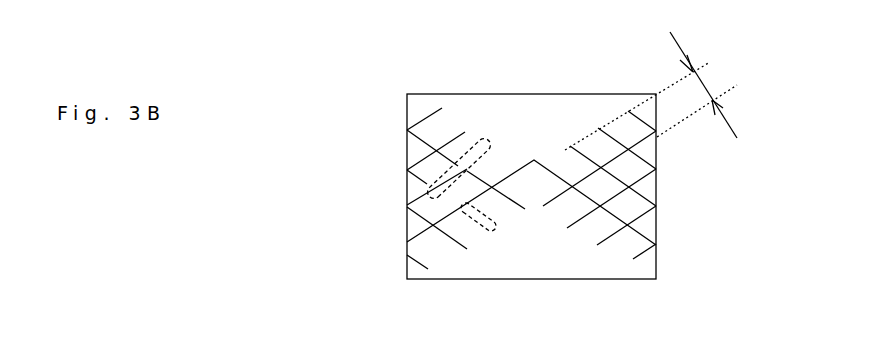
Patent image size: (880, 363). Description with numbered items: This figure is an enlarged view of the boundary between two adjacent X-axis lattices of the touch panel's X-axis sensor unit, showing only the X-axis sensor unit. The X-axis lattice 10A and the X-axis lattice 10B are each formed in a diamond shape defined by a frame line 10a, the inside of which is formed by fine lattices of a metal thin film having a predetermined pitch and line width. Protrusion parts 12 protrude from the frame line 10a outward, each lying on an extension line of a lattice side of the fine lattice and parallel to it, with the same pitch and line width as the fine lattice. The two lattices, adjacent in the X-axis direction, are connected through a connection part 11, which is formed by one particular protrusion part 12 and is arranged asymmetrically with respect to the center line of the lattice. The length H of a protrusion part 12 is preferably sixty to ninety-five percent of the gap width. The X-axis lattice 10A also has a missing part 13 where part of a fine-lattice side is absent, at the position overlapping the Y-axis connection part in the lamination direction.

The frame line 10a is at (414, 229).
The X-axis lattice 10A is at (450, 220).
The X-axis lattice 10B is at (643, 232).
The connection part 11 is at (533, 158).
The protrusion part 12 is at (450, 138).
The missing part 13 is at (489, 142).
The length of the protrusion part H is at (660, 91).